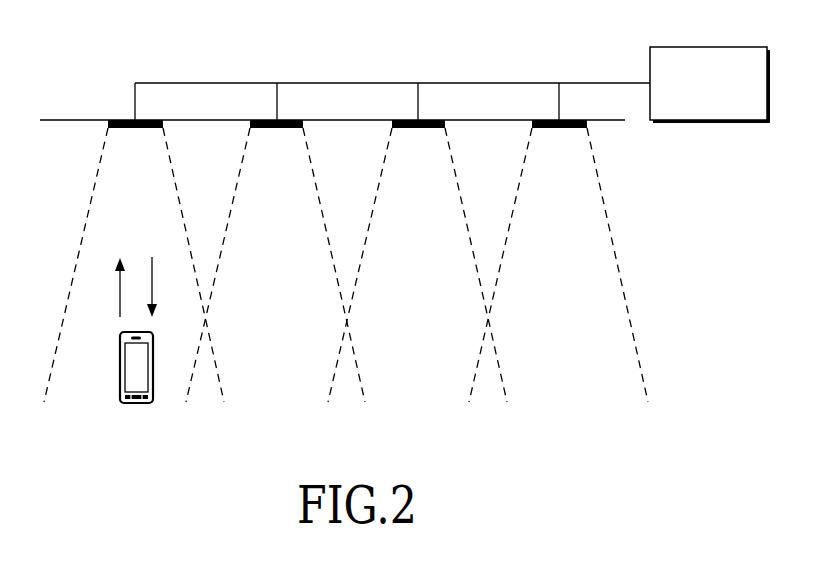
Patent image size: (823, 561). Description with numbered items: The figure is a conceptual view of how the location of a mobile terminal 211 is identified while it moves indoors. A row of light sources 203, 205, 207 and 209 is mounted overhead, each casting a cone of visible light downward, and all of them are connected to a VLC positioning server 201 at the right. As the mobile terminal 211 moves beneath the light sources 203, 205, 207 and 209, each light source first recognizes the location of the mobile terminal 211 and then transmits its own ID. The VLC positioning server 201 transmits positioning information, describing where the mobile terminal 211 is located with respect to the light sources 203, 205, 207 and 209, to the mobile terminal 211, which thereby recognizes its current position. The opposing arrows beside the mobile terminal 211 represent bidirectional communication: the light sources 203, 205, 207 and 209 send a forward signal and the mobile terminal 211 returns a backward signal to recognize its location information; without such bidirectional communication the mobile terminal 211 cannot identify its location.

The VLC positioning server 201 is at (708, 47).
The light source 203 is at (135, 130).
The light source 205 is at (277, 130).
The light source 207 is at (418, 130).
The light source 209 is at (559, 130).
The mobile terminal 211 is at (120, 366).